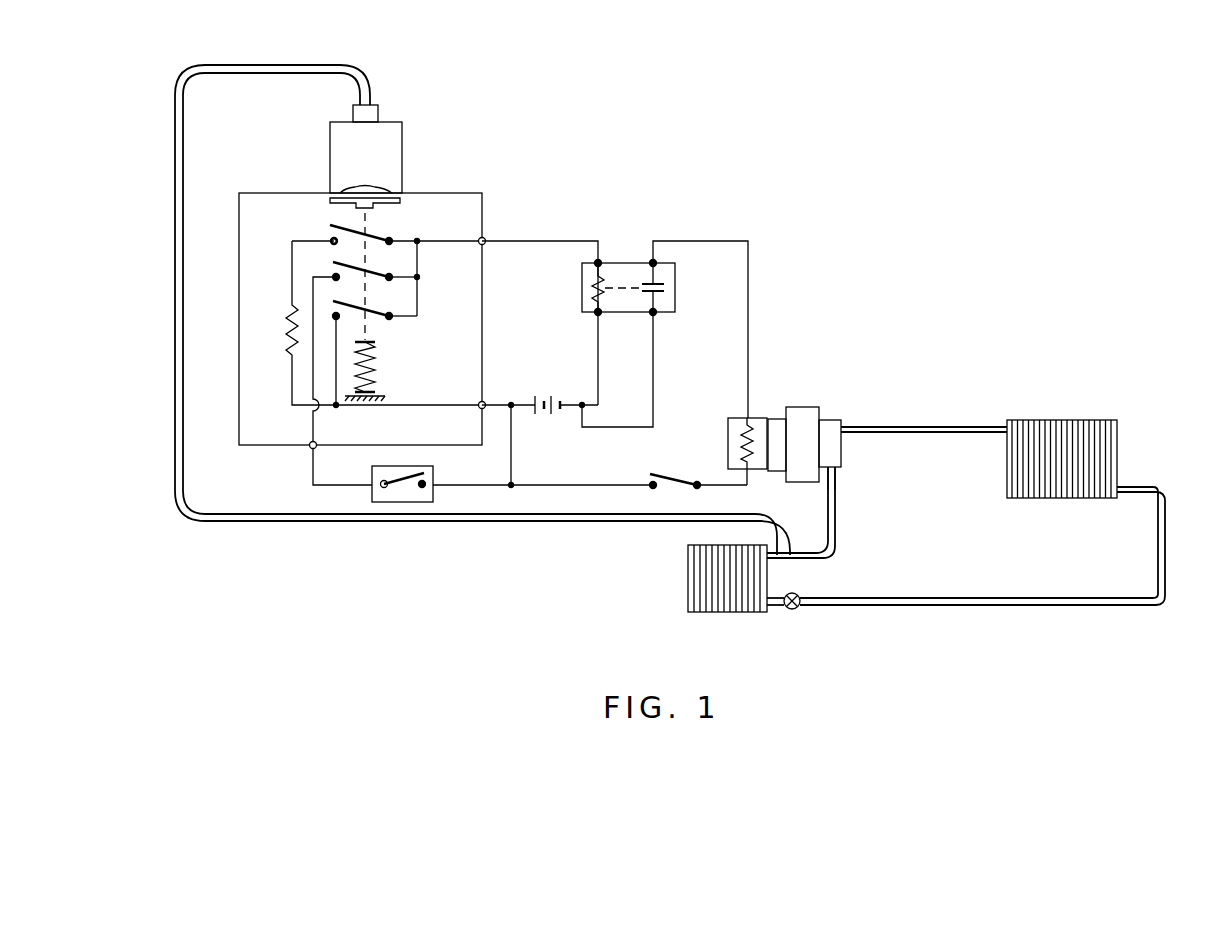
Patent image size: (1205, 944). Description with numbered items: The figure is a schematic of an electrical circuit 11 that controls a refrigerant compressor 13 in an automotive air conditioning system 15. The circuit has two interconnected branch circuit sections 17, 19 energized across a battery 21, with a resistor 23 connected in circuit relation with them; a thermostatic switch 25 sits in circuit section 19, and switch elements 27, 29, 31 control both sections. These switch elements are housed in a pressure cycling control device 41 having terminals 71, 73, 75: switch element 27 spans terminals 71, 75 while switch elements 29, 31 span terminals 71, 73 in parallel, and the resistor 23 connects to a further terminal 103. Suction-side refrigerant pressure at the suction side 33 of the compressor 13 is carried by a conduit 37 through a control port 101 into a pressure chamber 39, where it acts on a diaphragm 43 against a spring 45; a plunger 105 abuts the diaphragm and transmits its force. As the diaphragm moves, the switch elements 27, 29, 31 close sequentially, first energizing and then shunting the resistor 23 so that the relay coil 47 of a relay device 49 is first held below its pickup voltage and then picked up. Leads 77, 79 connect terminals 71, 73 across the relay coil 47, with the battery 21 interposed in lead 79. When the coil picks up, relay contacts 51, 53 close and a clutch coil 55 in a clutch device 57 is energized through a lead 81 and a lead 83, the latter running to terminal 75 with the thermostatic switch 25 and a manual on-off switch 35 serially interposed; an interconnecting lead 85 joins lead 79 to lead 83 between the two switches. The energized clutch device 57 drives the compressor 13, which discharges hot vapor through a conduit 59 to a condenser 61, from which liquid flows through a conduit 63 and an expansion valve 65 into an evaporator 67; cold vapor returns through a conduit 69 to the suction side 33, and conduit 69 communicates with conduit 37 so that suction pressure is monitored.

The electrical circuit 11 is at (576, 174).
The refrigerant compressor 13 is at (833, 418).
The air conditioning system 15 is at (1013, 408).
The circuit section 17 is at (443, 319).
The circuit section 19 is at (299, 416).
The battery 21 is at (552, 394).
The resistor 23 is at (288, 322).
The thermostatic switch 25 is at (372, 497).
The switch element 27 is at (372, 234).
The switch element 29 is at (386, 283).
The switch element 31 is at (392, 322).
The suction side 33 is at (838, 467).
The on-off switch 35 is at (668, 470).
The conduit 37 is at (500, 522).
The pressure chamber 39 is at (330, 135).
The control device 41 is at (461, 191).
The diaphragm 43 is at (393, 190).
The spring 45 is at (378, 372).
The relay coil 47 is at (592, 295).
The relay device 49 is at (627, 263).
The relay contact 51 is at (657, 280).
The relay contact 53 is at (660, 294).
The clutch coil 55 is at (742, 450).
The clutch device 57 is at (760, 418).
The conduit 59 is at (920, 426).
The condenser 61 is at (1117, 456).
The conduit 63 is at (1158, 545).
The expansion valve 65 is at (796, 609).
The evaporator 67 is at (688, 570).
The conduit 69 is at (836, 536).
The terminal 71 is at (485, 237).
The terminal 73 is at (486, 400).
The terminal 75 is at (316, 450).
The lead 77 is at (532, 241).
The lead 79 is at (523, 407).
The lead 81 is at (750, 296).
The lead 83 is at (722, 486).
The interconnecting lead 85 is at (511, 463).
The control port 101 is at (378, 112).
The terminal 103 is at (330, 237).
The plunger 105 is at (300, 165).